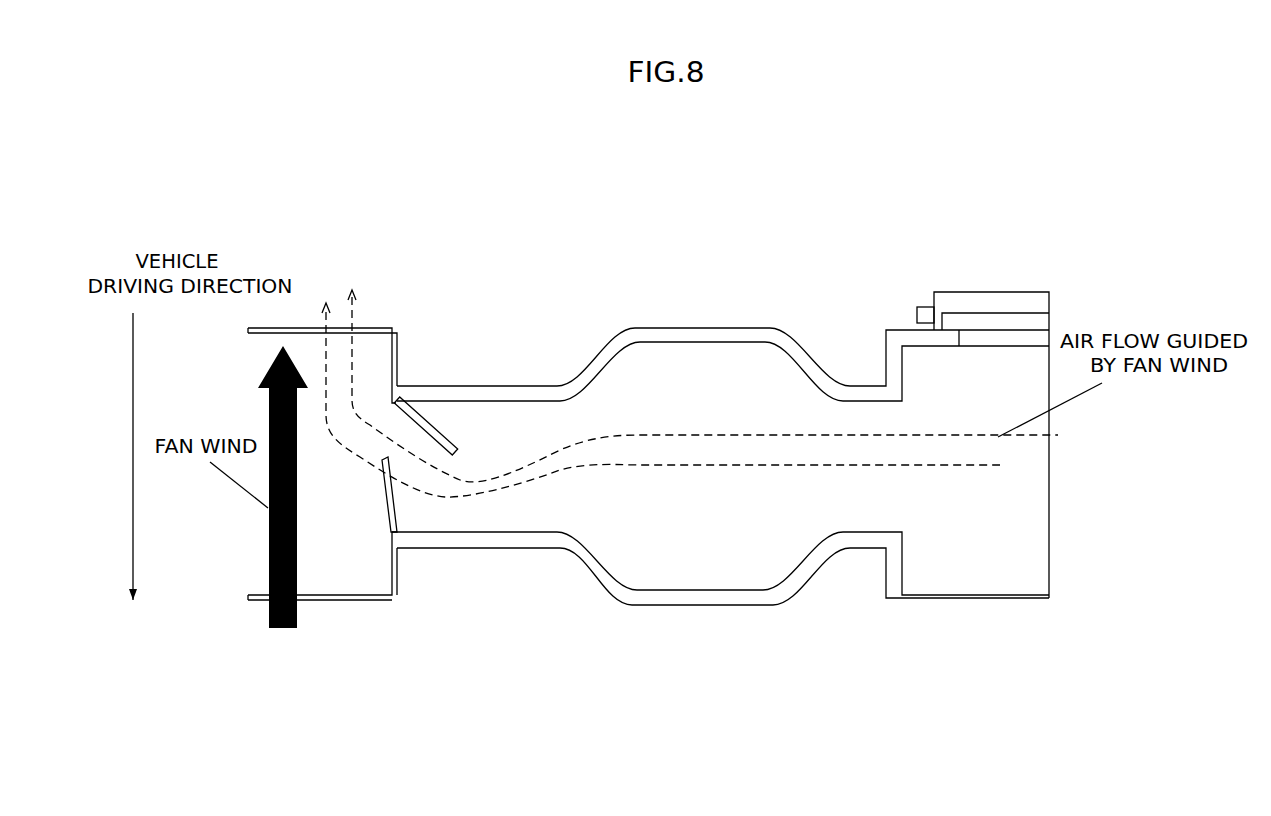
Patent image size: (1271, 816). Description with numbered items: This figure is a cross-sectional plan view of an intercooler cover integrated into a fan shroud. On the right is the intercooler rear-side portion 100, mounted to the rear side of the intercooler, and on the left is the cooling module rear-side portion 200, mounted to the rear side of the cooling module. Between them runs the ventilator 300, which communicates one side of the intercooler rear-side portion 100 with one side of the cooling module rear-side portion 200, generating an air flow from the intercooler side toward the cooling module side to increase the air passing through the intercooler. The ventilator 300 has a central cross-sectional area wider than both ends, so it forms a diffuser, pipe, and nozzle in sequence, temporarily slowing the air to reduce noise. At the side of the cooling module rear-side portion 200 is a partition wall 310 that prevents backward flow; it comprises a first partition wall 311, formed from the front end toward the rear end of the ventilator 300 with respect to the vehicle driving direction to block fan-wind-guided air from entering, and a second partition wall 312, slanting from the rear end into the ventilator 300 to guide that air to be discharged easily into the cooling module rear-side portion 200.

The intercooler rear-side portion 100 is at (970, 562).
The cooling module rear-side portion 200 is at (338, 579).
The ventilator 300 is at (681, 487).
The partition wall 310 is at (496, 558).
The first partition wall 311 is at (395, 495).
The second partition wall 312 is at (457, 452).